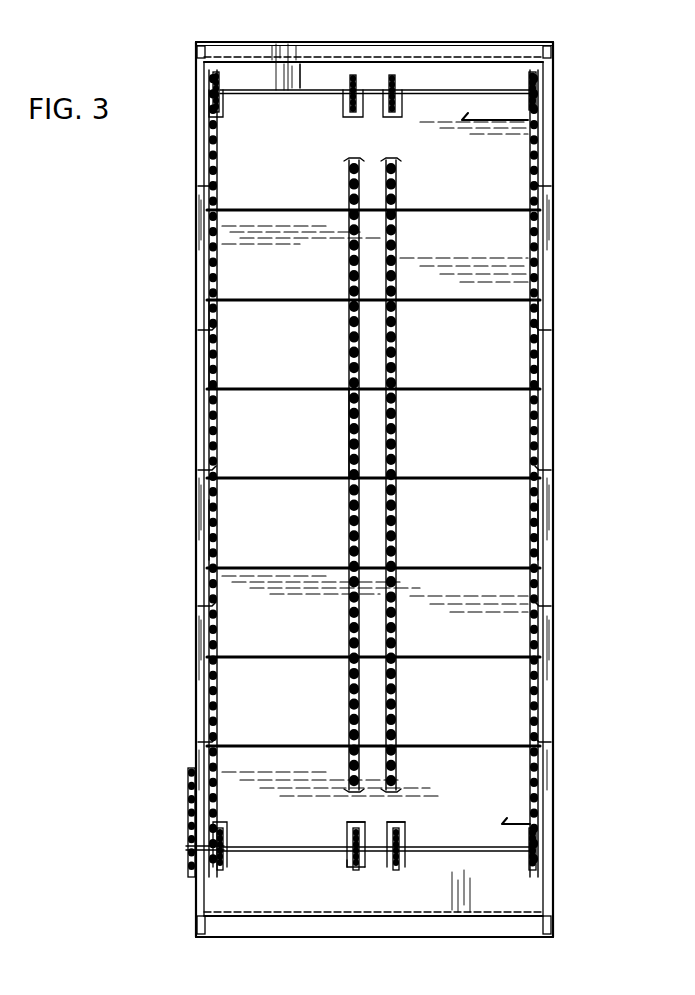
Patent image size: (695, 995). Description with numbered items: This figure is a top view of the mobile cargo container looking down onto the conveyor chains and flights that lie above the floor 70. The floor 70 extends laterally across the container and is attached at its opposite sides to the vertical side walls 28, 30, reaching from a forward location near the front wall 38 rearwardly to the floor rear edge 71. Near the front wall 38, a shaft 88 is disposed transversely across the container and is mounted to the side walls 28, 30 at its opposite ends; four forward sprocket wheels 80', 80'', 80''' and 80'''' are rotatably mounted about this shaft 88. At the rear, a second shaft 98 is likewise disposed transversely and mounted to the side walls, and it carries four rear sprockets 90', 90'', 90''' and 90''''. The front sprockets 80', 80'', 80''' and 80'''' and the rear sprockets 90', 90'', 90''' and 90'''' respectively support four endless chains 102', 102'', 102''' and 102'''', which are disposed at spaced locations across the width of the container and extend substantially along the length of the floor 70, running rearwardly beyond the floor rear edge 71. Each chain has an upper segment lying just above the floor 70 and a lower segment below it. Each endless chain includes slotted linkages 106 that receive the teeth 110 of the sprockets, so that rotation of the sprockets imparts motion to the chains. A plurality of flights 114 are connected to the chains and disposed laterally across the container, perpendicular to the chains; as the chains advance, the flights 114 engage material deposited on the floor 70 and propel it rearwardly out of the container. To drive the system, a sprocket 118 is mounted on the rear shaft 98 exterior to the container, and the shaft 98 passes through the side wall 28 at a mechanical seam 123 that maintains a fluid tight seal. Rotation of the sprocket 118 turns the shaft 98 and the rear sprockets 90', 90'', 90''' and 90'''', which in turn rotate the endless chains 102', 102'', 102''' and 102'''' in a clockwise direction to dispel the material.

The front wall 38 is at (470, 60).
The floor rear edge 71 is at (308, 857).
The side wall 28 is at (208, 274).
The side wall 30 is at (540, 274).
The endless chain 102' is at (250, 345).
The endless chain 102'' is at (324, 475).
The endless chain 102''' is at (431, 475).
The endless chain 102'''' is at (496, 345).
The flights 114 is at (320, 389).
The slotted linkages 106 is at (218, 542).
The floor 70 is at (520, 532).
The forward sprocket wheel 80' is at (237, 63).
The forward sprocket wheel 80'' is at (371, 63).
The forward sprocket wheel 80''' is at (420, 63).
The forward sprocket wheel 80'''' is at (556, 60).
The shaft 88 is at (318, 90).
The rear sprocket 90' is at (237, 861).
The rear sprocket 90'' is at (367, 861).
The rear sprocket 90''' is at (421, 861).
The rear sprocket 90'''' is at (508, 864).
The teeth 110 is at (354, 840).
The shaft 98 is at (350, 865).
The sprocket 118 is at (187, 855).
The mechanical seam 123 is at (200, 846).